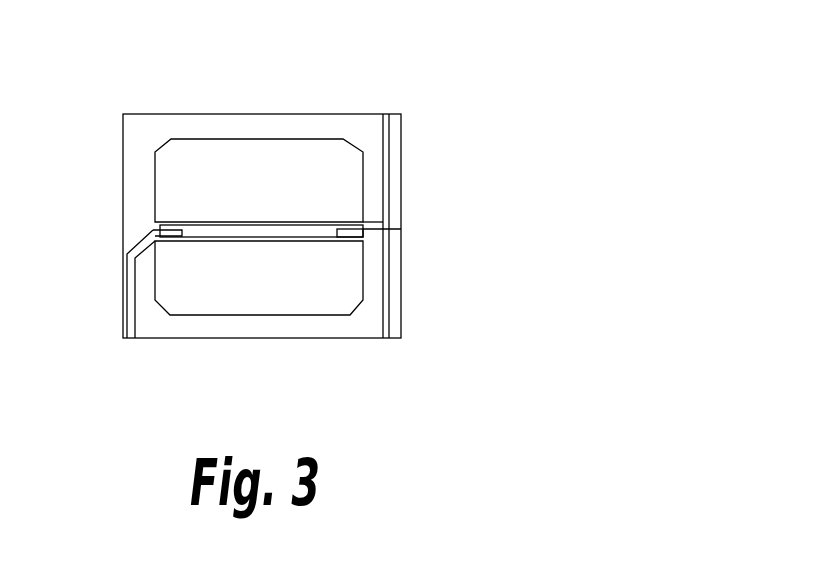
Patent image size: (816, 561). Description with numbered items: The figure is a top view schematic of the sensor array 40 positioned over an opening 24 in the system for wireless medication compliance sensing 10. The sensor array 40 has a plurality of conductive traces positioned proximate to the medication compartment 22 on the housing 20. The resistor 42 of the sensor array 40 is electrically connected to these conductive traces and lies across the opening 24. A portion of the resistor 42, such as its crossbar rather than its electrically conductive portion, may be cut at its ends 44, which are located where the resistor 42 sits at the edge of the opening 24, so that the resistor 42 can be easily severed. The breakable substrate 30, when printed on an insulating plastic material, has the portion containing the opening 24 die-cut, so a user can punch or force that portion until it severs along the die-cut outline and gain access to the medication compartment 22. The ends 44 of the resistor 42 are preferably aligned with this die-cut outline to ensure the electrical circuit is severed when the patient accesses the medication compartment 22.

The system for wireless medication compliance sensing 10 is at (452, 93).
The housing 20 is at (143, 114).
The medication compartment 22 is at (343, 140).
The opening 24 is at (347, 304).
The breakable substrate 30 is at (223, 162).
The sensor array 40 is at (128, 270).
The resistor 42 is at (270, 222).
The ends 44 is at (363, 222).